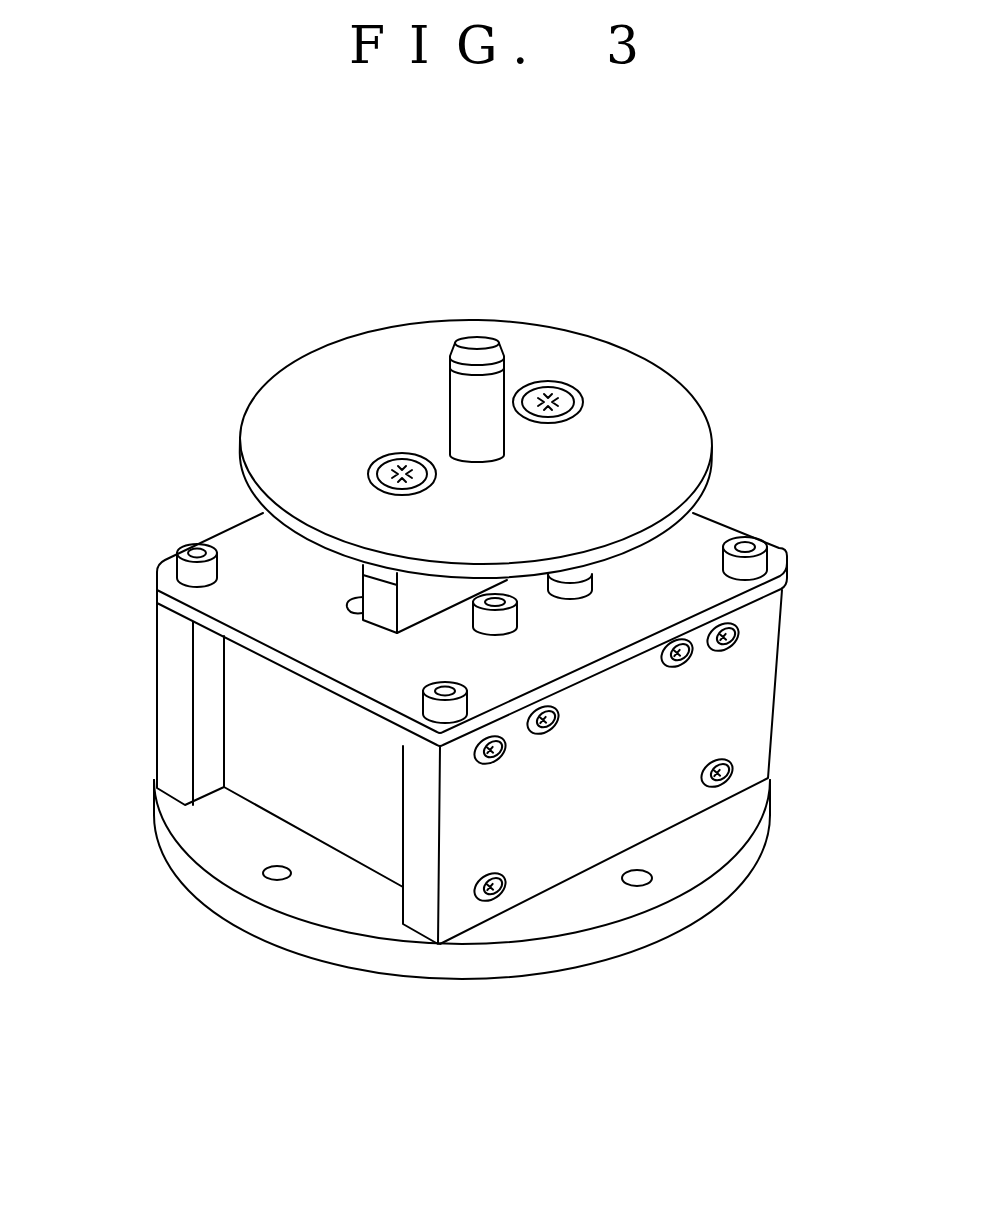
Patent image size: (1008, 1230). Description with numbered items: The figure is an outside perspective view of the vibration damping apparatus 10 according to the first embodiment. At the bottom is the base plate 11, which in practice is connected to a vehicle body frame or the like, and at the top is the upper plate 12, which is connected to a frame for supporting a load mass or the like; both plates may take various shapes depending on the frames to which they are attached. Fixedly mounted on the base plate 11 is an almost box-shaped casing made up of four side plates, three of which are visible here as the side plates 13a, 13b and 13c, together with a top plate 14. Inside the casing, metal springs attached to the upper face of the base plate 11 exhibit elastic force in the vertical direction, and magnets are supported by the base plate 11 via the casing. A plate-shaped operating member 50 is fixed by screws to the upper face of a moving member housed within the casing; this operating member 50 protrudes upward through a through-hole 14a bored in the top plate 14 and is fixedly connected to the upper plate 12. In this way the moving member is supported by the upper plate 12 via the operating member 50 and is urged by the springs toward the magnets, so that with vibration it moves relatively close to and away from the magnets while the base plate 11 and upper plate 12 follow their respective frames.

The vibration damping apparatus 10 is at (781, 369).
The base plate 11 is at (541, 963).
The upper plate 12 is at (577, 352).
The side plate 13a is at (743, 700).
The side plate 13b is at (167, 647).
The side plate 13c is at (363, 843).
The top plate 14 is at (693, 540).
The through-hole 14a is at (373, 618).
The operating member 50 is at (367, 588).